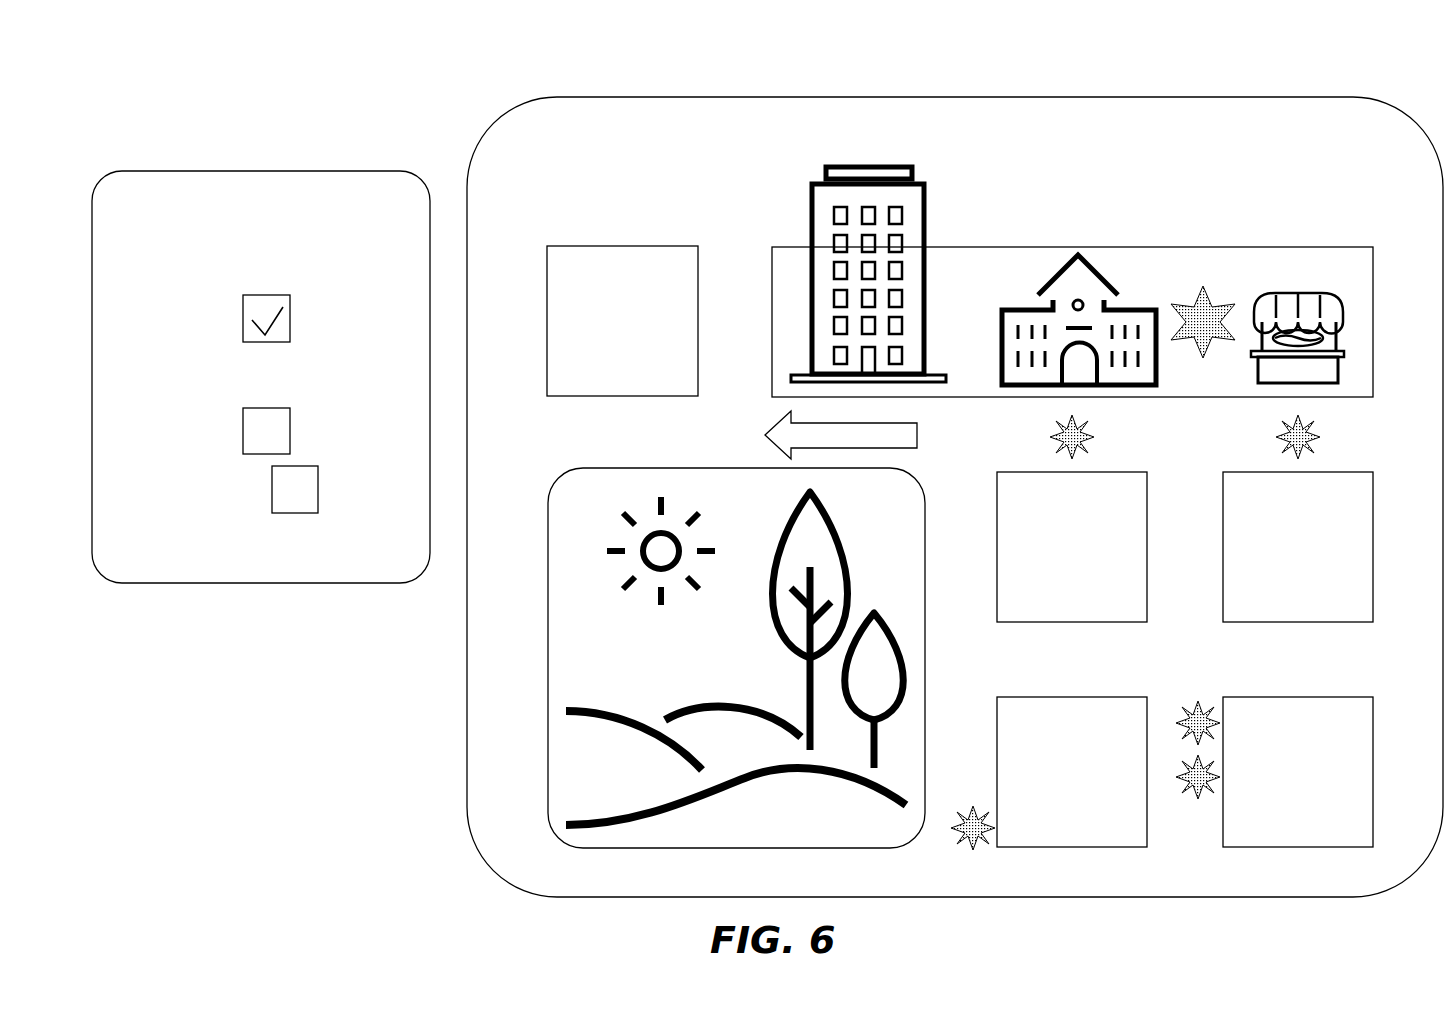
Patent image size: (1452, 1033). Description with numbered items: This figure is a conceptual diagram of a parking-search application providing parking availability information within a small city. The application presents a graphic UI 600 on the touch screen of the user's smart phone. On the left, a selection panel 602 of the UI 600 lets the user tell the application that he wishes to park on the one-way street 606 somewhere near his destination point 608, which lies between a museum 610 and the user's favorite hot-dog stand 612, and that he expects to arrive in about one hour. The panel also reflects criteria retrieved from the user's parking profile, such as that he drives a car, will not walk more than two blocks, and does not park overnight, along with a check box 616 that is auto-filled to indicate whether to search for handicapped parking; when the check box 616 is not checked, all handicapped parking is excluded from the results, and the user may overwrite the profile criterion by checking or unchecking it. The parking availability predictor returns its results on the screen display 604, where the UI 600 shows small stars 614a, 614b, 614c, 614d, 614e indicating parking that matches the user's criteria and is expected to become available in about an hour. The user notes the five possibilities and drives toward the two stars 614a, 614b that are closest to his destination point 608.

The graphic UI 600 is at (210, 95).
The selection panel 602 is at (281, 158).
The screen display 604 is at (656, 86).
The one-way street 606 is at (870, 435).
The destination point 608 is at (1205, 273).
The museum 610 is at (1058, 250).
The hot-dog stand 612 is at (1280, 278).
The small star 614a is at (1110, 437).
The small star 614b is at (1338, 437).
The small star 614c is at (1236, 723).
The small star 614d is at (1236, 777).
The small star 614e is at (1012, 828).
The check box 616 is at (325, 525).